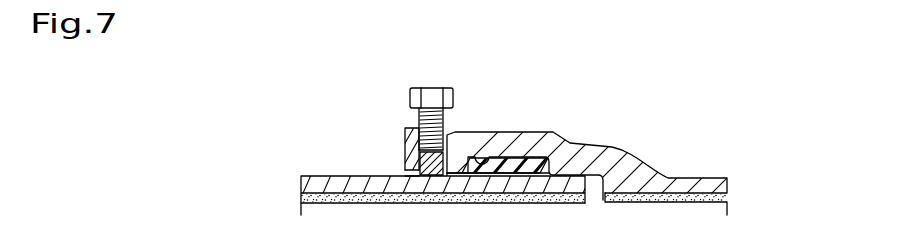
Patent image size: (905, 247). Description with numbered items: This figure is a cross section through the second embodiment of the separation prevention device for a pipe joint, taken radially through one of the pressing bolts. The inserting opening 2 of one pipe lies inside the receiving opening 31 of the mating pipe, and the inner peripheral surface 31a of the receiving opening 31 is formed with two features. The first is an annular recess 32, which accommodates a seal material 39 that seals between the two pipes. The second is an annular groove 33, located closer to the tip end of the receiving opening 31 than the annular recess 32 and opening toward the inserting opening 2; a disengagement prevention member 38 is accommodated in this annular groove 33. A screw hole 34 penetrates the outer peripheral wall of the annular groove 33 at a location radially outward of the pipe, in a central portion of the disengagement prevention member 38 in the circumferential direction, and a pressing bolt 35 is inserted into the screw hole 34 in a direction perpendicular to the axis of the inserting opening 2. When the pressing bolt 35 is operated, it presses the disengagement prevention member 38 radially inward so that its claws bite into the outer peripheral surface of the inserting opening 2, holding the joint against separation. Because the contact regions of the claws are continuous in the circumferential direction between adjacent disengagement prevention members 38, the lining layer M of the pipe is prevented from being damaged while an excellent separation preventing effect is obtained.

The inserting opening 2 is at (323, 176).
The lining layer M is at (557, 196).
The receiving opening 31 is at (566, 132).
The inner peripheral surface 31a is at (451, 174).
The annular recess 32 is at (503, 157).
The annular groove 33 is at (420, 173).
The screw hole 34 is at (405, 135).
The pressing bolt 35 is at (453, 92).
The disengagement prevention member 38 is at (433, 176).
The seal material 39 is at (494, 174).